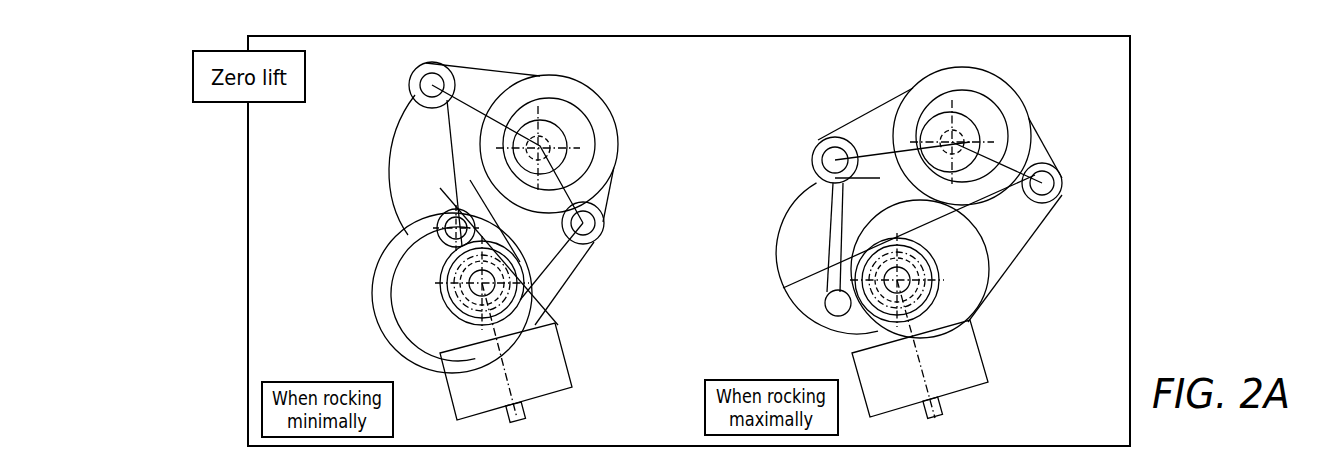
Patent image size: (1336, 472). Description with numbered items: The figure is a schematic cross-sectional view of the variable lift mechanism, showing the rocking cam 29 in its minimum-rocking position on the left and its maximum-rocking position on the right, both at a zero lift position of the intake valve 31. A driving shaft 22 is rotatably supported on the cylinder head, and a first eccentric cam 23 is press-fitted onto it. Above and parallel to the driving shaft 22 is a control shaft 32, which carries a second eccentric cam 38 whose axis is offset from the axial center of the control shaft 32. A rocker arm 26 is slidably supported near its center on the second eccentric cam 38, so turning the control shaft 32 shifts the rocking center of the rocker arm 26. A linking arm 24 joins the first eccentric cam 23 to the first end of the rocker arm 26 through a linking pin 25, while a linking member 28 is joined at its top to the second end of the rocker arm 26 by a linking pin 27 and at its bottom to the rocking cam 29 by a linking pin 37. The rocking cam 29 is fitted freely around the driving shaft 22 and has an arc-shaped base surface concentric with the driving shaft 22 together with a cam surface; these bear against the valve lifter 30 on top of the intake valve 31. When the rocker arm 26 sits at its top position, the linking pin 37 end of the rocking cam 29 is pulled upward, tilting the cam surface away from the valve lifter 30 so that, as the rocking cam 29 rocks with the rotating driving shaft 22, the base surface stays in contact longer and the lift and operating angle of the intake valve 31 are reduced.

The driving shaft 22 is at (524, 298).
The first eccentric cam 23 is at (412, 324).
The linking arm 24 is at (560, 270).
The linking pin 25 is at (602, 223).
The rocker arm 26 is at (614, 131).
The linking pin 27 is at (428, 84).
The linking member 28 is at (396, 164).
The rocking cam 29 is at (420, 276).
The valve lifter 30 is at (558, 352).
The intake valve 31 is at (528, 410).
The control shaft 32 is at (566, 138).
The linking pin 37 is at (410, 208).
The second eccentric cam 38 is at (572, 112).